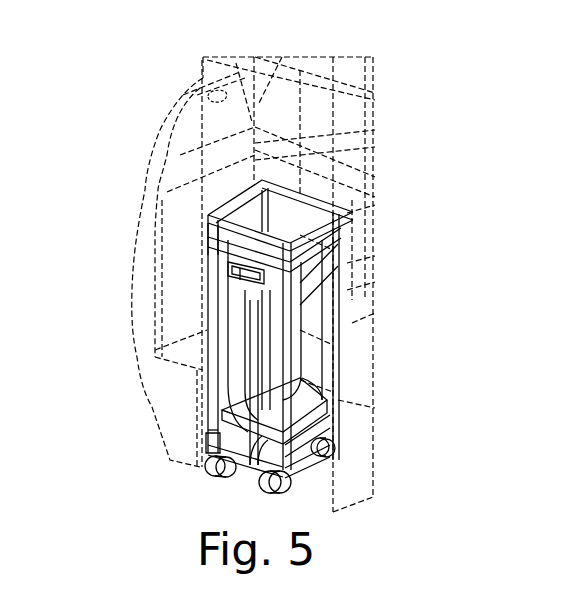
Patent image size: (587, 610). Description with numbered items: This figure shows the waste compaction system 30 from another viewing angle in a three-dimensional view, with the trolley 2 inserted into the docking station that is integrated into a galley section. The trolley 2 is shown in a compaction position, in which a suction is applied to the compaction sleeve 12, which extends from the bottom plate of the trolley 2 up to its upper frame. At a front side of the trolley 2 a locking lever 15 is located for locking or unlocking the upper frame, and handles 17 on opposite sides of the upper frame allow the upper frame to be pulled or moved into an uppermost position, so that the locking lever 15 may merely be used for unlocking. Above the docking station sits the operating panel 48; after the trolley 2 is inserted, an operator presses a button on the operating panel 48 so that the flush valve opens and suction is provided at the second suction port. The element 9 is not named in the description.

The trolley 2 is at (328, 325).
The base frame 9 is at (208, 427).
The compaction sleeve 12 is at (223, 411).
The locking lever 15 is at (210, 243).
The handles 17 is at (245, 279).
The waste compaction system 30 is at (392, 205).
The operating panel 48 is at (206, 92).